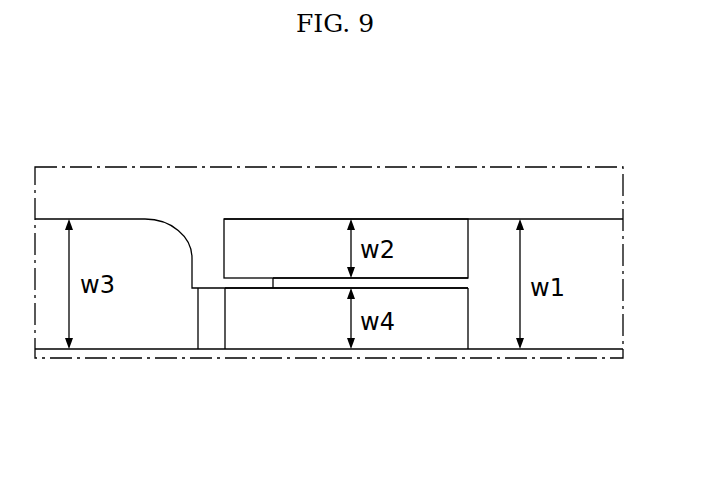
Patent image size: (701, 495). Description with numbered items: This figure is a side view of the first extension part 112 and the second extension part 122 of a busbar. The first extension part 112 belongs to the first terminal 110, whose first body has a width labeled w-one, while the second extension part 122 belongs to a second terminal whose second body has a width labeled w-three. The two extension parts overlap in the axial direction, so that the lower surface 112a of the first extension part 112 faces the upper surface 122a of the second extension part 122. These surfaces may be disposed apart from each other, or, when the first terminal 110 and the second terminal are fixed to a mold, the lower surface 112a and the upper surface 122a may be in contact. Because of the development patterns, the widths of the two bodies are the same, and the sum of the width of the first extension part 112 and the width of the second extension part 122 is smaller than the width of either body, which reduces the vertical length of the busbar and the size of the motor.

The first terminal 110 is at (573, 206).
The first extension part 112 is at (437, 237).
The lower surface of the first extension part 112a is at (258, 288).
The second extension part 122 is at (437, 322).
The upper surface of the second extension part 122a is at (258, 288).